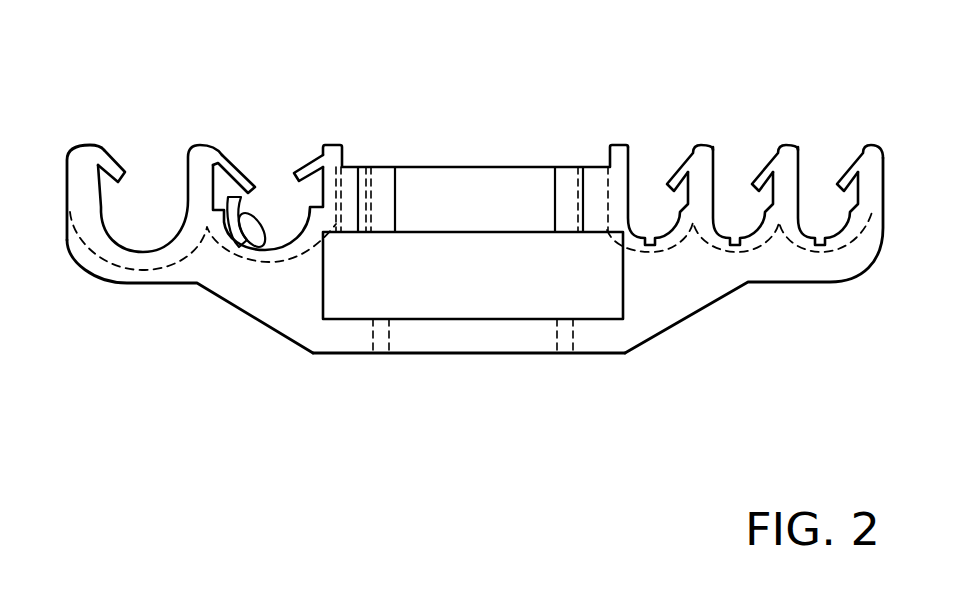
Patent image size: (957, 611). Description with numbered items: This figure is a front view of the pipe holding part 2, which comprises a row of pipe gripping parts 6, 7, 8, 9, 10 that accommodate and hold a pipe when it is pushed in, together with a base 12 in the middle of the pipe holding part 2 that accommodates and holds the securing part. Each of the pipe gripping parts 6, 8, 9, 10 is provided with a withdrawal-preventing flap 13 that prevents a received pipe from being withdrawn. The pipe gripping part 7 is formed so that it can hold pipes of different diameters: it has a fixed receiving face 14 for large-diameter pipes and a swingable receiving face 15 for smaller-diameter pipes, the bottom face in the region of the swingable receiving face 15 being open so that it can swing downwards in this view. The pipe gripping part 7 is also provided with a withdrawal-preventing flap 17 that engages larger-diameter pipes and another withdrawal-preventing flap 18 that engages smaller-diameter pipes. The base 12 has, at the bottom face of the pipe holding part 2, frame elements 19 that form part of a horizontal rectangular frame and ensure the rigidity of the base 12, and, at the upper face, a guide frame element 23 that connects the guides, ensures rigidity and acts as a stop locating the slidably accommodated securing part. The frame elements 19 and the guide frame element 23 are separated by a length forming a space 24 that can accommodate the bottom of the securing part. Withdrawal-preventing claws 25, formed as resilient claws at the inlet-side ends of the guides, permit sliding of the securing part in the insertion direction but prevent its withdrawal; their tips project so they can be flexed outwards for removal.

The pipe holding part 2 is at (540, 72).
The pipe gripping part 6 is at (145, 162).
The pipe gripping part 7 is at (276, 160).
The pipe gripping part 8 is at (645, 162).
The pipe gripping part 9 is at (728, 160).
The pipe gripping part 10 is at (818, 160).
The base 12 is at (416, 136).
The withdrawal-preventing flap 13 is at (104, 153).
The fixed receiving face 14 is at (237, 243).
The swingable receiving face 15 is at (262, 248).
The withdrawal-preventing flap 17 is at (317, 147).
The withdrawal-preventing flap 18 is at (233, 157).
The frame elements 19 is at (440, 337).
The guide frame element 23 is at (482, 206).
The space 24 is at (366, 285).
The withdrawal-preventing claws 25 is at (386, 200).